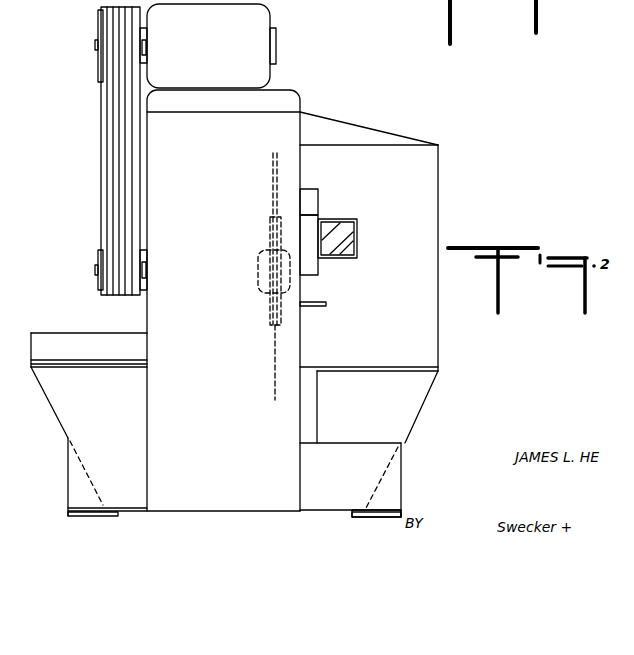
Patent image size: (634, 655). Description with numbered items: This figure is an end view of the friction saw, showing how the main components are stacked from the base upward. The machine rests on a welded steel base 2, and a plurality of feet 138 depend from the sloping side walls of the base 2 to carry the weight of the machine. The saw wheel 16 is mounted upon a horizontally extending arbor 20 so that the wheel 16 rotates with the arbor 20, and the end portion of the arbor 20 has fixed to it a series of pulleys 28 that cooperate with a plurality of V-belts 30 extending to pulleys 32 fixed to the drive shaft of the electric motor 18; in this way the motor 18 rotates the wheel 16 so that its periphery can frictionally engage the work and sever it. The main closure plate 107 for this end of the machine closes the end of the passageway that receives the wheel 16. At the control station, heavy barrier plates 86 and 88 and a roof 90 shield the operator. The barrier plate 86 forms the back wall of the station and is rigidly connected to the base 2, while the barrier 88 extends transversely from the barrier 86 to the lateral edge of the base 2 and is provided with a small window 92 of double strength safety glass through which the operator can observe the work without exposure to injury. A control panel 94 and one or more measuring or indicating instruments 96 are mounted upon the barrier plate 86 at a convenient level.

The base 2 is at (406, 398).
The saw wheel 16 is at (274, 195).
The electric motor 18 is at (218, 52).
The arbor 20 is at (145, 278).
The pulleys 28 is at (99, 258).
The V-belts 30 is at (117, 158).
The pulleys 32 is at (97, 24).
The barrier plate 86 is at (302, 172).
The barrier plate 88 is at (438, 198).
The roof 90 is at (371, 132).
The window 92 is at (346, 236).
The control panel 94 is at (308, 270).
The measuring or indicating instruments 96 is at (314, 200).
The main closure plate 107 is at (231, 314).
The feet 138 is at (120, 517).